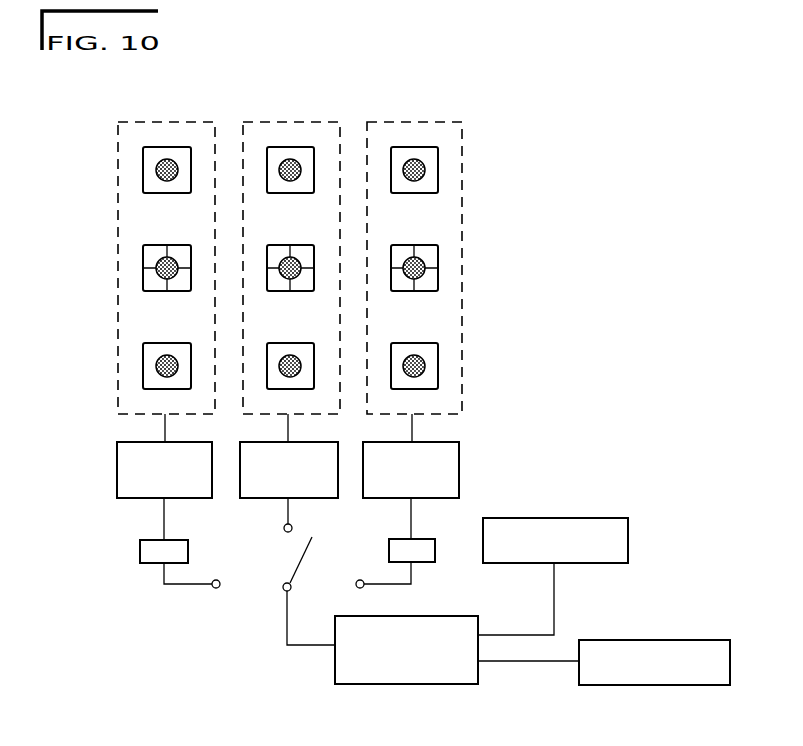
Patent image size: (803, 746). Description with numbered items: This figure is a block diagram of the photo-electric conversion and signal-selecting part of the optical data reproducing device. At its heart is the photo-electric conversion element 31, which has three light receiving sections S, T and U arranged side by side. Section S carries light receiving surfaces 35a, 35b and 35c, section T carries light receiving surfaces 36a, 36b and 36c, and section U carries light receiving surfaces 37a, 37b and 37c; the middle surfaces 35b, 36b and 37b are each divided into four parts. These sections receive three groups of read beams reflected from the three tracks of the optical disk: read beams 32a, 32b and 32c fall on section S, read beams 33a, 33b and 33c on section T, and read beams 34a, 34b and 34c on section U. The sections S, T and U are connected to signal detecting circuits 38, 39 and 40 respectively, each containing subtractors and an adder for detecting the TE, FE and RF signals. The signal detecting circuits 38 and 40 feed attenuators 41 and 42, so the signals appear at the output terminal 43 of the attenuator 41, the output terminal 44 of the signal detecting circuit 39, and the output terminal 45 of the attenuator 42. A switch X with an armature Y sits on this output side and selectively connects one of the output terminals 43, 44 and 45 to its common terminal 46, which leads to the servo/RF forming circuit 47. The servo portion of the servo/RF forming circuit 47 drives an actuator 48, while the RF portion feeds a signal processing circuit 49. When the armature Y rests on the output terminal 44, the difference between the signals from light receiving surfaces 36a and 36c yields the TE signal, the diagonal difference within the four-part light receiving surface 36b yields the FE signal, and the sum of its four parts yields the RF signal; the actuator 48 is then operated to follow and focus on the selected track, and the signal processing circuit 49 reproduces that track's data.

The photo-electric conversion element 31 is at (338, 149).
The read beam 32a is at (114, 163).
The read beam 32b is at (112, 265).
The read beam 32c is at (109, 370).
The read beam 33a is at (337, 133).
The read beam 33b is at (274, 297).
The read beam 33c is at (329, 400).
The read beam 34a is at (398, 200).
The read beam 34b is at (459, 246).
The read beam 34c is at (401, 336).
The light receiving surface 35a is at (154, 135).
The light receiving surface 35b is at (120, 246).
The light receiving surface 35c is at (118, 344).
The light receiving surface 36a is at (286, 135).
The light receiving surface 36b is at (281, 243).
The light receiving surface 36c is at (300, 341).
The light receiving surface 37a is at (457, 149).
The light receiving surface 37b is at (466, 268).
The light receiving surface 37c is at (457, 361).
The signal detecting circuit 38 is at (131, 470).
The signal detecting circuit 39 is at (273, 493).
The signal detecting circuit 40 is at (450, 470).
The attenuator 41 is at (136, 561).
The attenuator 42 is at (430, 534).
The output terminal 43 is at (242, 566).
The output terminal 44 is at (319, 518).
The output terminal 45 is at (396, 596).
The common terminal 46 is at (313, 599).
The servo/RF forming circuit 47 is at (406, 671).
The actuator 48 is at (555, 519).
The signal processing circuit 49 is at (654, 637).
The light receiving section S is at (172, 120).
The light receiving section T is at (297, 120).
The light receiving section U is at (412, 120).
The switch X is at (228, 623).
The armature Y is at (321, 560).